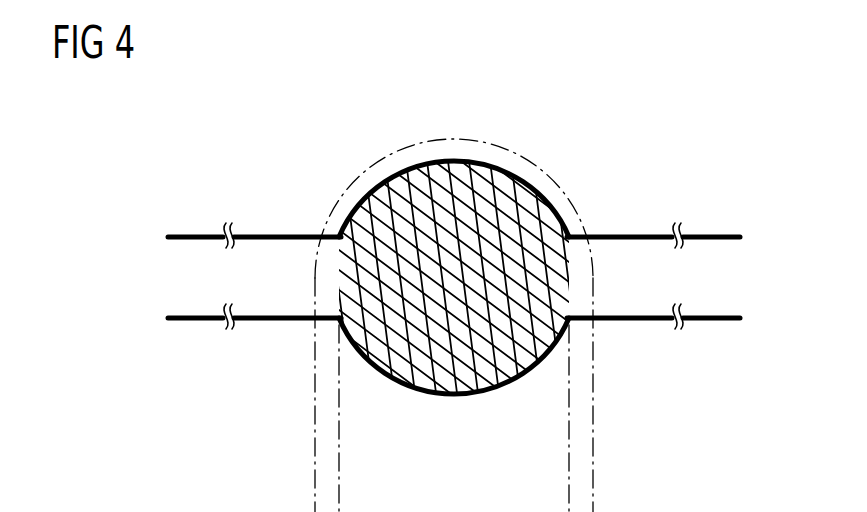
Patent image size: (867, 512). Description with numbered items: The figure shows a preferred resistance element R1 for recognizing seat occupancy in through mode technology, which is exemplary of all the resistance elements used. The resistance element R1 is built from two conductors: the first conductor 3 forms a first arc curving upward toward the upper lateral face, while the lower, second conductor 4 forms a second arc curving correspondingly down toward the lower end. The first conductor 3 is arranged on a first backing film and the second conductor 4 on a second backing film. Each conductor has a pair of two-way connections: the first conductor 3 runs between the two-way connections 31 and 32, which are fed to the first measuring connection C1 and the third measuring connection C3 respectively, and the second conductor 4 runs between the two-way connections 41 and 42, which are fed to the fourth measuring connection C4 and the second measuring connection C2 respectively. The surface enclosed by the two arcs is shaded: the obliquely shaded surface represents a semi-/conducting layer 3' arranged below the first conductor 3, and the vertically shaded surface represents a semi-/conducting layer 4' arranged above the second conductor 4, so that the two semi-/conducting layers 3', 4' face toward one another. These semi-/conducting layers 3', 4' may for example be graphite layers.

The resistance element R1 is at (345, 142).
The first conductor 3 is at (454, 163).
The semi-/conducting layer 3' is at (463, 221).
The second conductor 4 is at (454, 393).
The semi-/conducting layer 4' is at (463, 311).
The two-way connection 31 is at (293, 233).
The two-way connection 32 is at (620, 233).
The two-way connection 41 is at (298, 322).
The two-way connection 42 is at (622, 322).
The first measuring connection C1 is at (182, 238).
The second measuring connection C2 is at (723, 318).
The third measuring connection C3 is at (723, 238).
The fourth measuring connection C4 is at (182, 318).